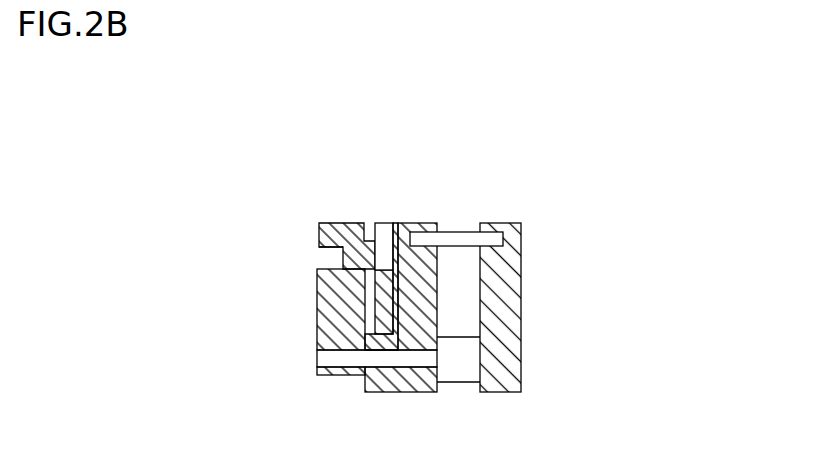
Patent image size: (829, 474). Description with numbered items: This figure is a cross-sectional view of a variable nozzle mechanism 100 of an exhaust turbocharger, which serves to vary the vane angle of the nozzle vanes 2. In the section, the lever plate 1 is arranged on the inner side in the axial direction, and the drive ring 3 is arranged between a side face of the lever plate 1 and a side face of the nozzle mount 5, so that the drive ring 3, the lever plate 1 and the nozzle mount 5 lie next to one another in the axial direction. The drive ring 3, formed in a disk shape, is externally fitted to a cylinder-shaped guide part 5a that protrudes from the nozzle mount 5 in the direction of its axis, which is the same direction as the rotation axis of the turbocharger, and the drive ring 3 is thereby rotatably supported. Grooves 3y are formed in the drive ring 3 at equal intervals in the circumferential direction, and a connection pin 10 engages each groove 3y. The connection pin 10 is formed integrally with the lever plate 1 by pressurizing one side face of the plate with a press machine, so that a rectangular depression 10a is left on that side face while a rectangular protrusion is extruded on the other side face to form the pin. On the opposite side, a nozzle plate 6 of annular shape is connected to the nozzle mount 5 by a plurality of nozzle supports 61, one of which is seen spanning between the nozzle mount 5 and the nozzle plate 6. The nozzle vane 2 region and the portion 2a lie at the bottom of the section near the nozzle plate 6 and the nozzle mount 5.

The variable nozzle mechanism 100 is at (541, 278).
The lever plate 1 is at (335, 316).
The nozzle vane 2 is at (460, 358).
The base portion 2a is at (394, 358).
The drive ring 3 is at (379, 225).
The groove 3y is at (382, 224).
The nozzle mount 5 is at (405, 224).
The guide part 5a is at (387, 339).
The nozzle plate 6 is at (505, 223).
The nozzle support 61 is at (457, 240).
The connection pin 10 is at (355, 252).
The rectangular depression 10a is at (324, 267).